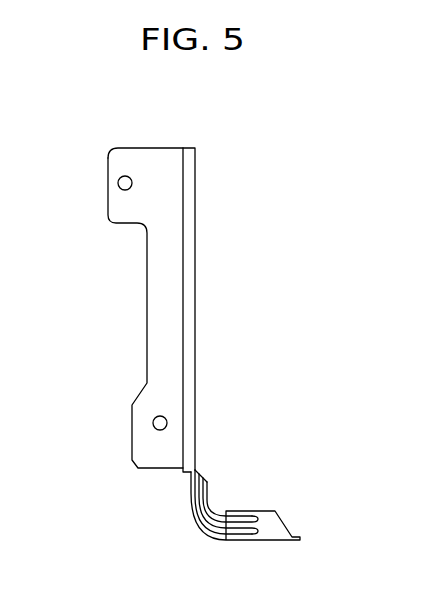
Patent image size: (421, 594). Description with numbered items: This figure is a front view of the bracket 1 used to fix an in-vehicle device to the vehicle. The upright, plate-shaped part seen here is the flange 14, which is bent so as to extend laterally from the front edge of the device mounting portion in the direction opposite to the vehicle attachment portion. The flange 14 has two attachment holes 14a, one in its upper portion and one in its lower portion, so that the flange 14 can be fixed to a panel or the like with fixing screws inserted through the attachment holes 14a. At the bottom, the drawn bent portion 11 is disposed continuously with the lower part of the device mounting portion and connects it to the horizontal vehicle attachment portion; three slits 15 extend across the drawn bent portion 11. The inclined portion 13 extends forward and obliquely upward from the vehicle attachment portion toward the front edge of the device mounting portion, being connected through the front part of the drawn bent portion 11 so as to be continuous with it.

The bracket 1 is at (134, 148).
The flange 14 is at (157, 318).
The attachment holes 14a is at (161, 421).
The drawn bent portion 11 is at (208, 500).
The slits 15 is at (245, 518).
The inclined portion 13 is at (273, 527).